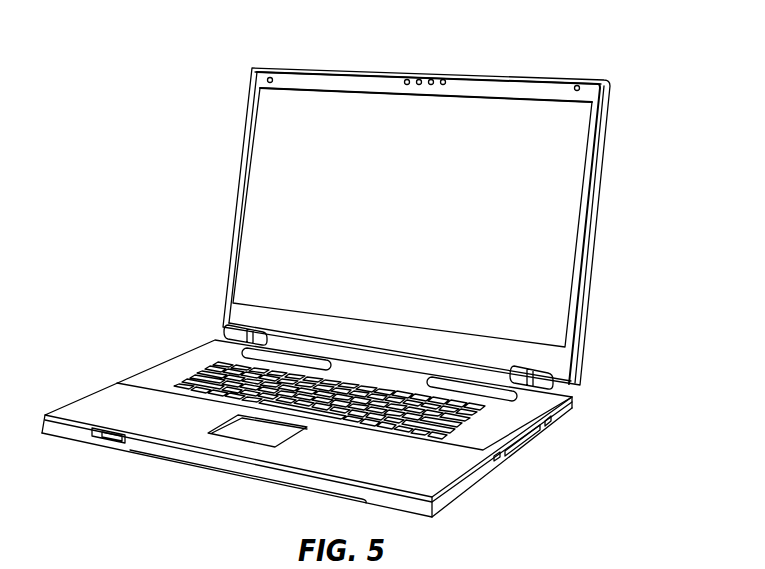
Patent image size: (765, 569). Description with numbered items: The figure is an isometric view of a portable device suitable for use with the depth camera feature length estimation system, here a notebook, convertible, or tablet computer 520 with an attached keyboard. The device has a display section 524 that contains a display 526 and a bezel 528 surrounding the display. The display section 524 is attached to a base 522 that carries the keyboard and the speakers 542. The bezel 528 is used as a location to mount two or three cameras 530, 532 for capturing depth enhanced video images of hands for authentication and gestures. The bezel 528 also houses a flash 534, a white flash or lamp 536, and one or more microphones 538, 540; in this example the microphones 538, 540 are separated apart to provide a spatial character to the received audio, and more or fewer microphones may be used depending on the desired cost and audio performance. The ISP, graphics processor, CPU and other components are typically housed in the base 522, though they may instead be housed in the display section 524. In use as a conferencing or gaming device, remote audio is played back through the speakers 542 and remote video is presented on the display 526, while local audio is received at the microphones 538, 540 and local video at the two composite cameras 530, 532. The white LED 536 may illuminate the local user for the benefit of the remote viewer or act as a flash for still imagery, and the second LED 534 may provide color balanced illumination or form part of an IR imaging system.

The computer 520 is at (122, 262).
The base 522 is at (137, 380).
The display section 524 is at (431, 199).
The display 526 is at (435, 255).
The bezel 528 is at (586, 222).
The camera 530 is at (419, 79).
The camera 532 is at (431, 79).
The flash 534 is at (443, 85).
The white flash or lamp 536 is at (407, 79).
The microphone 538 is at (268, 77).
The microphone 540 is at (580, 85).
The speakers 542 is at (240, 343).